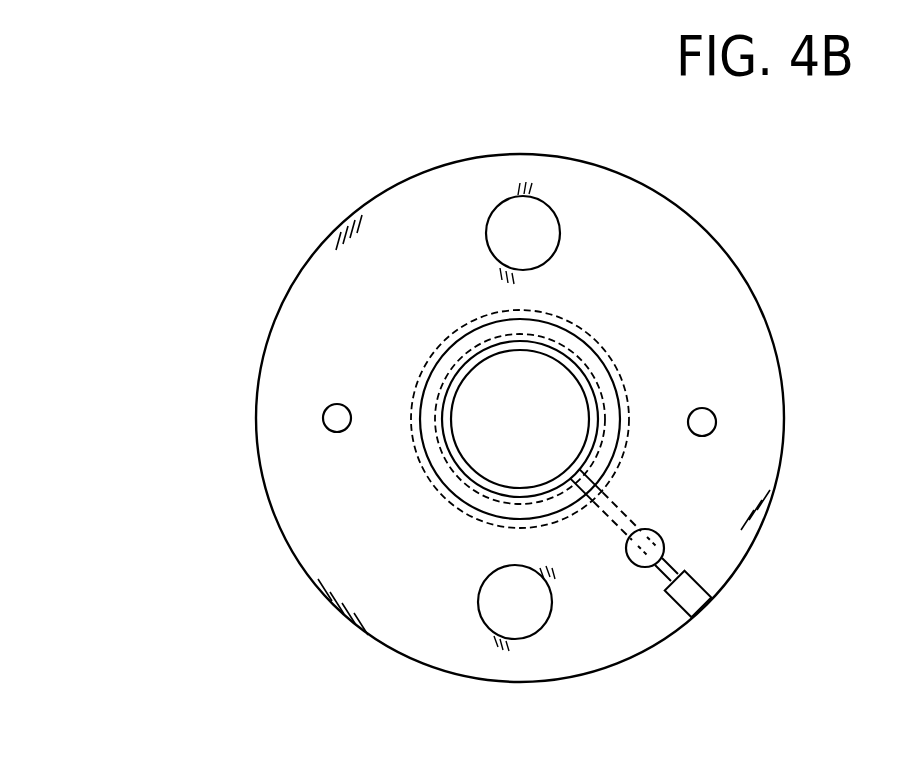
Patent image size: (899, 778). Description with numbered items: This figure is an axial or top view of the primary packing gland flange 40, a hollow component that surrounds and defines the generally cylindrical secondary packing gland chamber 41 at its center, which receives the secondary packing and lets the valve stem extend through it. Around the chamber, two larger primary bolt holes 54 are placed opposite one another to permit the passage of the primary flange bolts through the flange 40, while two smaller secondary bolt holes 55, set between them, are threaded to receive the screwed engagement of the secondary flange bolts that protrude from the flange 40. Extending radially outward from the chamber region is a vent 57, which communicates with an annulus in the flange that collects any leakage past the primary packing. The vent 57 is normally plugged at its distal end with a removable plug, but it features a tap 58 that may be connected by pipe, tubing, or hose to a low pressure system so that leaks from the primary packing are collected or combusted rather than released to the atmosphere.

The primary packing gland flange 40 is at (805, 218).
The secondary packing gland chamber 41 is at (520, 434).
The primary bolt holes 54 is at (533, 228).
The secondary bolt holes 55 is at (333, 420).
The vent 57 is at (615, 517).
The tap 58 is at (660, 556).